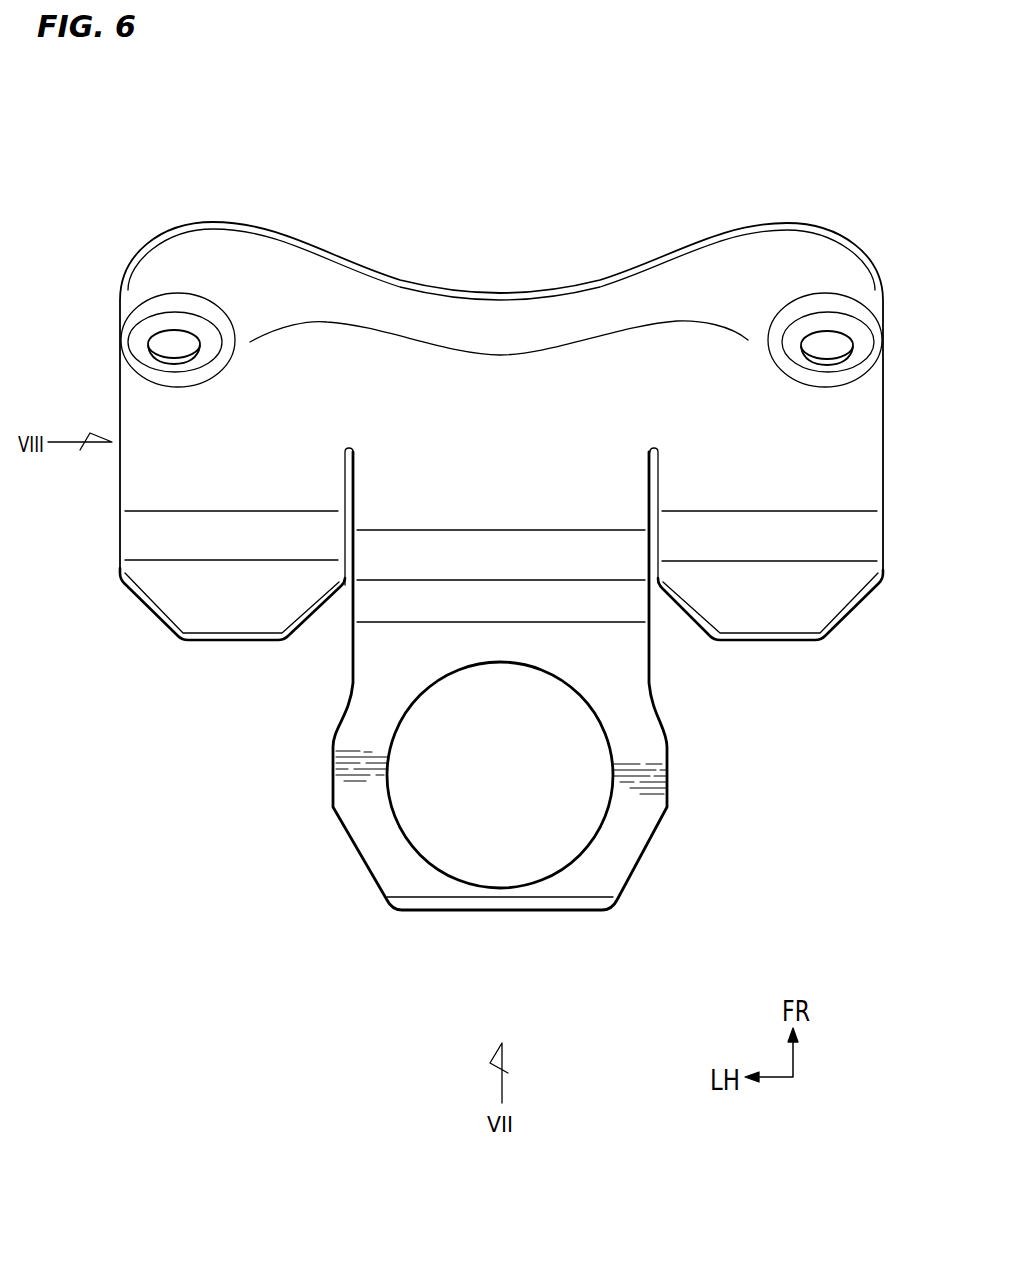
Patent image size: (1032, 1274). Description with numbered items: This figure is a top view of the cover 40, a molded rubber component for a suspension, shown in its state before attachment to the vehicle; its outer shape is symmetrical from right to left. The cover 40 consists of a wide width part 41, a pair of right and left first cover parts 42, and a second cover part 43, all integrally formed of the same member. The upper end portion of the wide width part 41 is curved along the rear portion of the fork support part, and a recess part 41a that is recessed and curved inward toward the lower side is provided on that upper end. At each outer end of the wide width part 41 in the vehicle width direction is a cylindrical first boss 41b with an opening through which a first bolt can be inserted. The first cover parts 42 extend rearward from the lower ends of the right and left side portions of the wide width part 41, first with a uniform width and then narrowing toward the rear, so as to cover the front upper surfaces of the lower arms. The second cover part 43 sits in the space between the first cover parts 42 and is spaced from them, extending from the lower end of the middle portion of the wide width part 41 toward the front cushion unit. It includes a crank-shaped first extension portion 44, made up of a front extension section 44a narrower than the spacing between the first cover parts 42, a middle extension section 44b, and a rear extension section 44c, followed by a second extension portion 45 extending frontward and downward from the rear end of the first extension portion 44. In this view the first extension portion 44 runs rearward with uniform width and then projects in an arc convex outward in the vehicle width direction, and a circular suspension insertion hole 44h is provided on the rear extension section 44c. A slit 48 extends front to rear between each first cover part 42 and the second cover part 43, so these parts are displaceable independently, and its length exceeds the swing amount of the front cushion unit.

The cover 40 is at (763, 86).
The wide width part 41 is at (583, 373).
The recess part 41a is at (497, 290).
The first boss 41b is at (165, 322).
The first cover part 42 is at (153, 483).
The second cover part 43 is at (548, 681).
The first extension portion 44 is at (650, 675).
The front extension section 44a is at (390, 487).
The middle extension section 44b is at (383, 602).
The rear extension section 44c is at (358, 822).
The suspension insertion hole 44h is at (611, 803).
The second extension portion 45 is at (473, 912).
The slit 48 is at (353, 520).